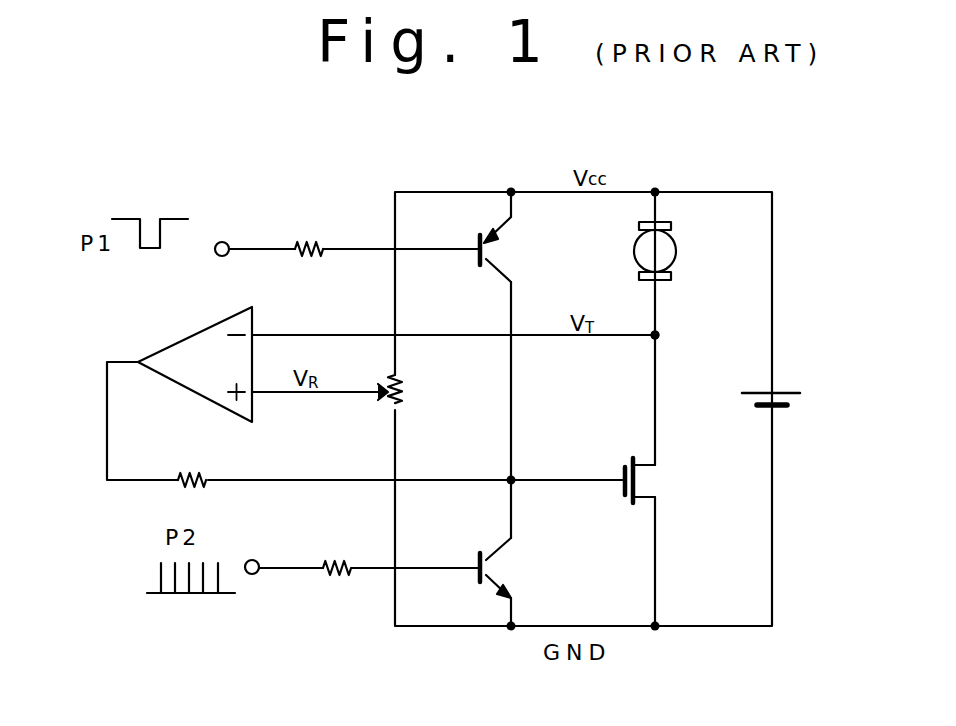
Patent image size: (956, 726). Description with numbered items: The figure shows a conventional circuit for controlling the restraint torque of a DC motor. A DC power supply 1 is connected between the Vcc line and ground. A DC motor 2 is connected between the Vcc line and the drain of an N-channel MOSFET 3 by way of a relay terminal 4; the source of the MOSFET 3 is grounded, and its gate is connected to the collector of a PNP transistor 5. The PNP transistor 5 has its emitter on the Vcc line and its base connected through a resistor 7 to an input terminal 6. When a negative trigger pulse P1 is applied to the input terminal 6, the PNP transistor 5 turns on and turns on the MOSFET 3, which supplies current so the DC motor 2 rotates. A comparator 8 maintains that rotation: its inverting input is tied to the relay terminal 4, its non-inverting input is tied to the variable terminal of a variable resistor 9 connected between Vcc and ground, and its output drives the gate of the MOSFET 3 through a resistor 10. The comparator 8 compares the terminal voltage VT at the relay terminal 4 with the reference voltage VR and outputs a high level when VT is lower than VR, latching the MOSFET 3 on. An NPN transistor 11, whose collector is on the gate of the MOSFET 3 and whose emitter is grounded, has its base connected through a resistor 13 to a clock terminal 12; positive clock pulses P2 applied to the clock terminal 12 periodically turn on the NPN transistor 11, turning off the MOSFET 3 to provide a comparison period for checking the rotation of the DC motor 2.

The DC power supply 1 is at (786, 410).
The DC motor 2 is at (677, 250).
The N-channel MOSFET 3 is at (645, 467).
The relay terminal 4 is at (660, 336).
The PNP transistor 5 is at (503, 267).
The input terminal 6 is at (219, 242).
The resistor 7 is at (301, 241).
The comparator 8 is at (190, 337).
The variable resistor 9 is at (404, 384).
The resistor 10 is at (186, 471).
The NPN transistor 11 is at (500, 552).
The clock terminal 12 is at (256, 576).
The resistor 13 is at (338, 556).